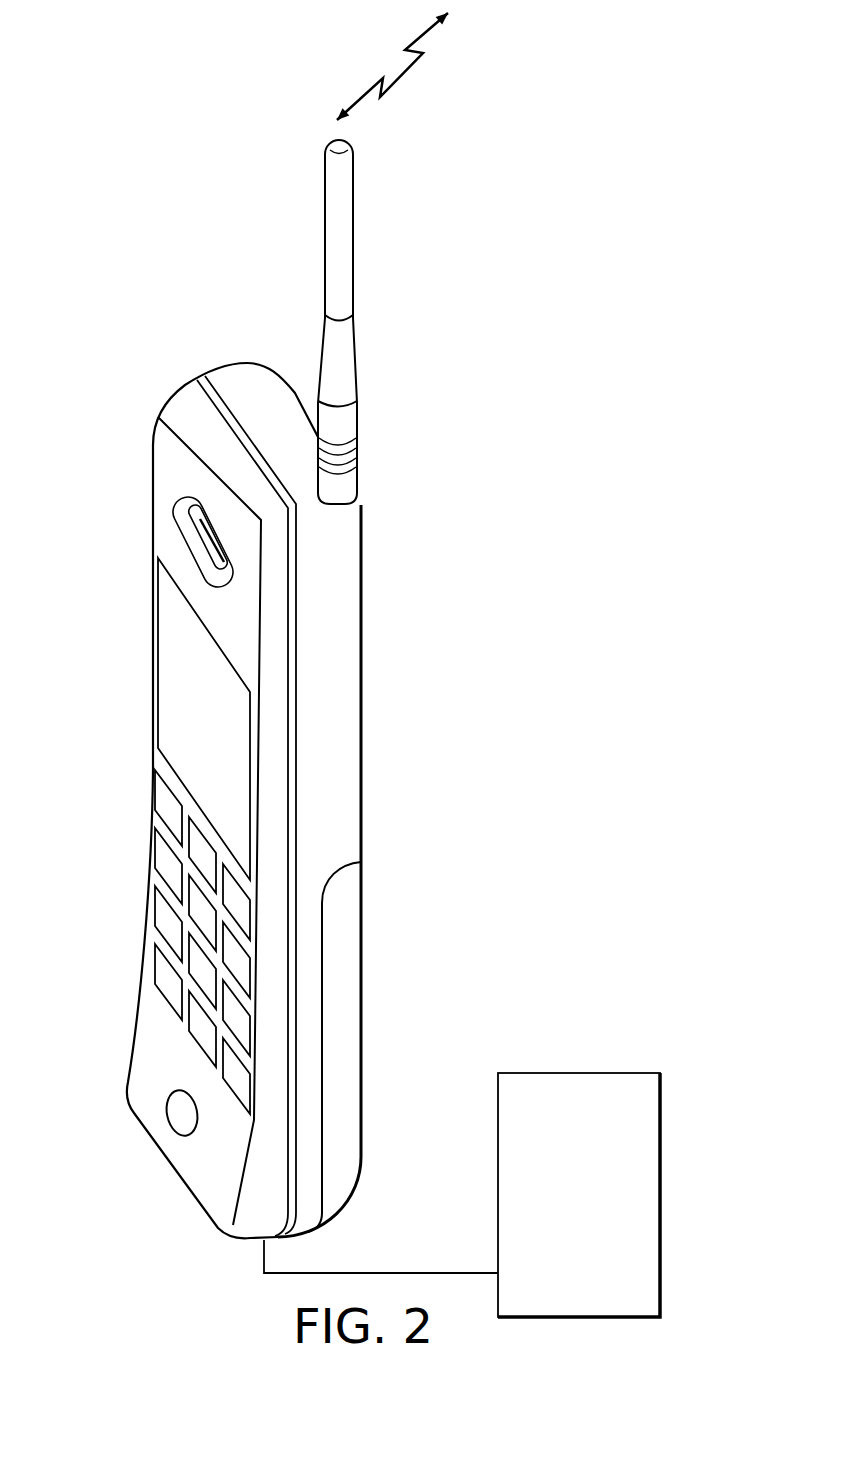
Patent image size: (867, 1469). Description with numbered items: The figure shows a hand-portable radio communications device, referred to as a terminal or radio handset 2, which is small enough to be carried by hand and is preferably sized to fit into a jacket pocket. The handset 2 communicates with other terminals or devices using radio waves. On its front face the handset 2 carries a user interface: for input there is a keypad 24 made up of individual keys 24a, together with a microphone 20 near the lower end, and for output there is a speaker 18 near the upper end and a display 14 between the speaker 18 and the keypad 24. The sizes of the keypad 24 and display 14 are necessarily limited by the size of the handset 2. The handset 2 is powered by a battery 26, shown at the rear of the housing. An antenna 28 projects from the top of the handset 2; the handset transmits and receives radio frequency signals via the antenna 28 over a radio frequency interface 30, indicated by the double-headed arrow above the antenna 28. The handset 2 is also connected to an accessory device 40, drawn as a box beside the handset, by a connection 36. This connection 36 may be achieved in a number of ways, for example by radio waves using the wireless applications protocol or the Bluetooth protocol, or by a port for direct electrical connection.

The radio handset 2 is at (160, 382).
The display 14 is at (150, 643).
The speaker 18 is at (190, 528).
The microphone 20 is at (172, 1120).
The keypad 24 is at (248, 957).
The keys 24a is at (165, 915).
The battery 26 is at (340, 1073).
The antenna 28 is at (332, 222).
The radio frequency interface 30 is at (410, 72).
The connection 36 is at (420, 1272).
The accessory device 40 is at (566, 1232).